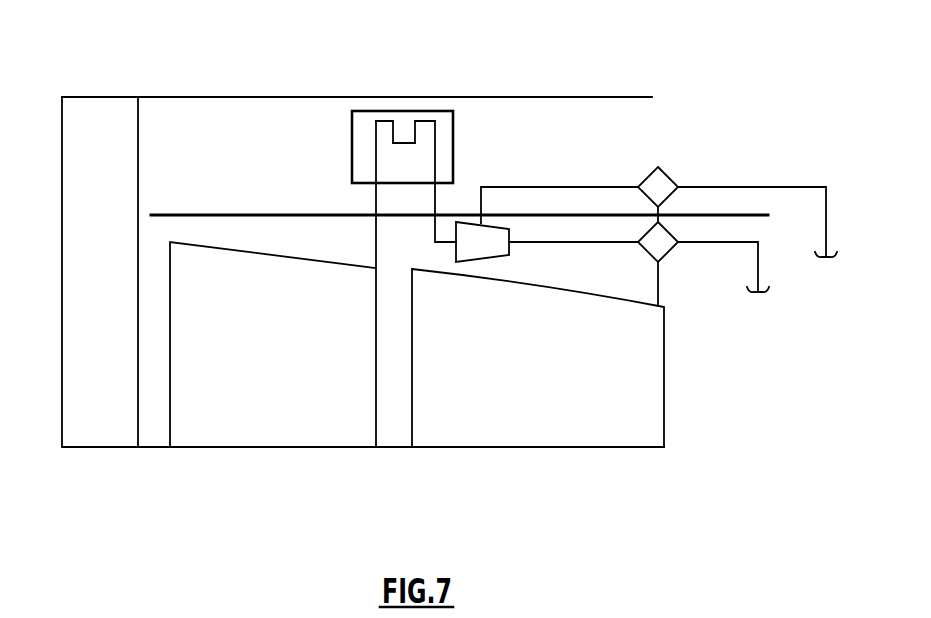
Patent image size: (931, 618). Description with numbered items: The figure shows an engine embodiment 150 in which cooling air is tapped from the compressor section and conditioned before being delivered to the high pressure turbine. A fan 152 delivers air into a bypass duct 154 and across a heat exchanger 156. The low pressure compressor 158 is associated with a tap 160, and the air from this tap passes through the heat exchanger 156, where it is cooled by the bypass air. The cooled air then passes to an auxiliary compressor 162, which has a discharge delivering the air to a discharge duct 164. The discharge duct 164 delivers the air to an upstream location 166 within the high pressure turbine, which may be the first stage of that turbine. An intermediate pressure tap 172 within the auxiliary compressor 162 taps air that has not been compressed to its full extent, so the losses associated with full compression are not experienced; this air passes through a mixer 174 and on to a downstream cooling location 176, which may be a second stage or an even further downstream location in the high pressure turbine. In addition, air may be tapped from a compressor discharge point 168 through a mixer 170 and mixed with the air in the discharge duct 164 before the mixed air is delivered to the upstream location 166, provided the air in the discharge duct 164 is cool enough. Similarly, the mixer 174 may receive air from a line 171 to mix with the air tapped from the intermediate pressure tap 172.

The engine embodiment 150 is at (341, 50).
The fan 152 is at (85, 186).
The bypass duct 154 is at (160, 163).
The heat exchanger 156 is at (407, 121).
The low pressure compressor 158 is at (228, 357).
The tap 160 is at (375, 242).
The auxiliary compressor 162 is at (467, 230).
The discharge duct 164 is at (537, 243).
The upstream location 166 is at (758, 257).
The compressor discharge point 168 is at (662, 305).
The mixer 170 is at (651, 250).
The line 171 is at (661, 205).
The intermediate pressure tap 172 is at (483, 223).
The mixer 174 is at (655, 180).
The downstream cooling location 176 is at (838, 158).